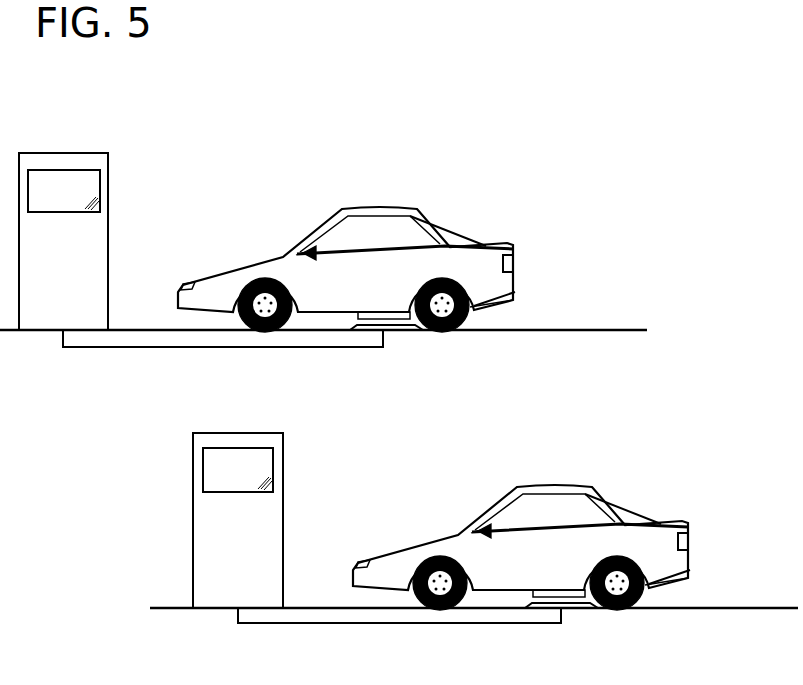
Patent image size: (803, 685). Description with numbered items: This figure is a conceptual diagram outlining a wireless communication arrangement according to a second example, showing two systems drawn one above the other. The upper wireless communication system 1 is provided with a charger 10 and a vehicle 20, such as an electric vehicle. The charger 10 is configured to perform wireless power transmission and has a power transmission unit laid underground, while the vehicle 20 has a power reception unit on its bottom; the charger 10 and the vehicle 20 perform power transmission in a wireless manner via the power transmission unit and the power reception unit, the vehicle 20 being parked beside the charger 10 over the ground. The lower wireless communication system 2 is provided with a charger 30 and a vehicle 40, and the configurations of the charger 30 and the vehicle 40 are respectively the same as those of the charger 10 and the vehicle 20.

The wireless communication system 1 is at (381, 123).
The wireless communication system 2 is at (499, 415).
The charger 10 is at (80, 152).
The vehicle 20 is at (518, 277).
The charger 30 is at (250, 432).
The vehicle 40 is at (693, 555).